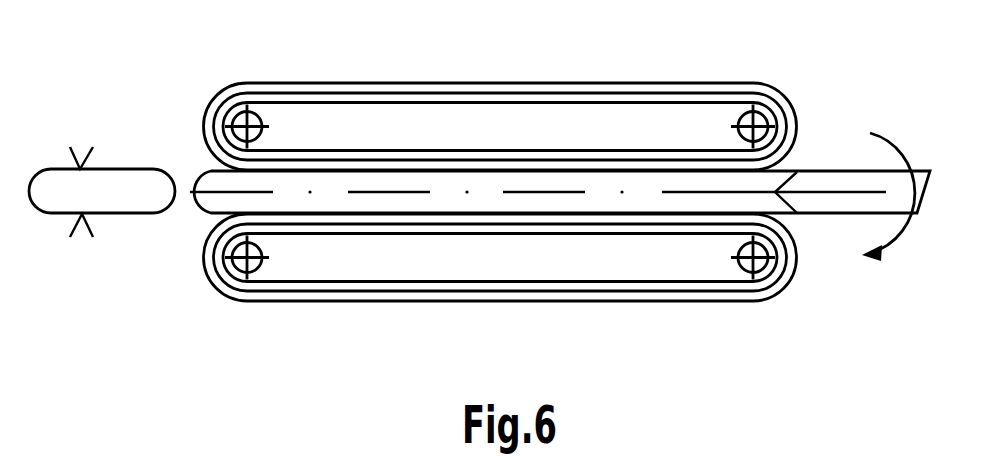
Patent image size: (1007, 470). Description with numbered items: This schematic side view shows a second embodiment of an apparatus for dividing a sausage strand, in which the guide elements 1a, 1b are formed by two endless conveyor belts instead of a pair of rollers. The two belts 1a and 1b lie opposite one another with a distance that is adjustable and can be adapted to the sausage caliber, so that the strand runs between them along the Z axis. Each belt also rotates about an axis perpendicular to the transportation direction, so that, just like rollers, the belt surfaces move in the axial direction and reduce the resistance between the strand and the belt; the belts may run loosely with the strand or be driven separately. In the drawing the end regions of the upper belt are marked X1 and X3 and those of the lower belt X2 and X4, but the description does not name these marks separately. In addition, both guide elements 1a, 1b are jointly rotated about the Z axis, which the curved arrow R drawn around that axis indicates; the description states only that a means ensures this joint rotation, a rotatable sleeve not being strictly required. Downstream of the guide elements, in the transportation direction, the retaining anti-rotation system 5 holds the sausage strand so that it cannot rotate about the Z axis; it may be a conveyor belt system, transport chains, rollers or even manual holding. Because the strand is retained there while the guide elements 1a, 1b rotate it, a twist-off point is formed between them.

The guide element 1a is at (652, 108).
The guide element 1b is at (663, 263).
The first coil terminal X1 is at (224, 106).
The second coil terminal X2 is at (227, 275).
The third coil terminal X3 is at (769, 106).
The fourth coil terminal X4 is at (768, 283).
The retaining anti-rotation system 5 is at (76, 220).
The Z axis Z is at (157, 191).
The rotation direction R is at (888, 219).